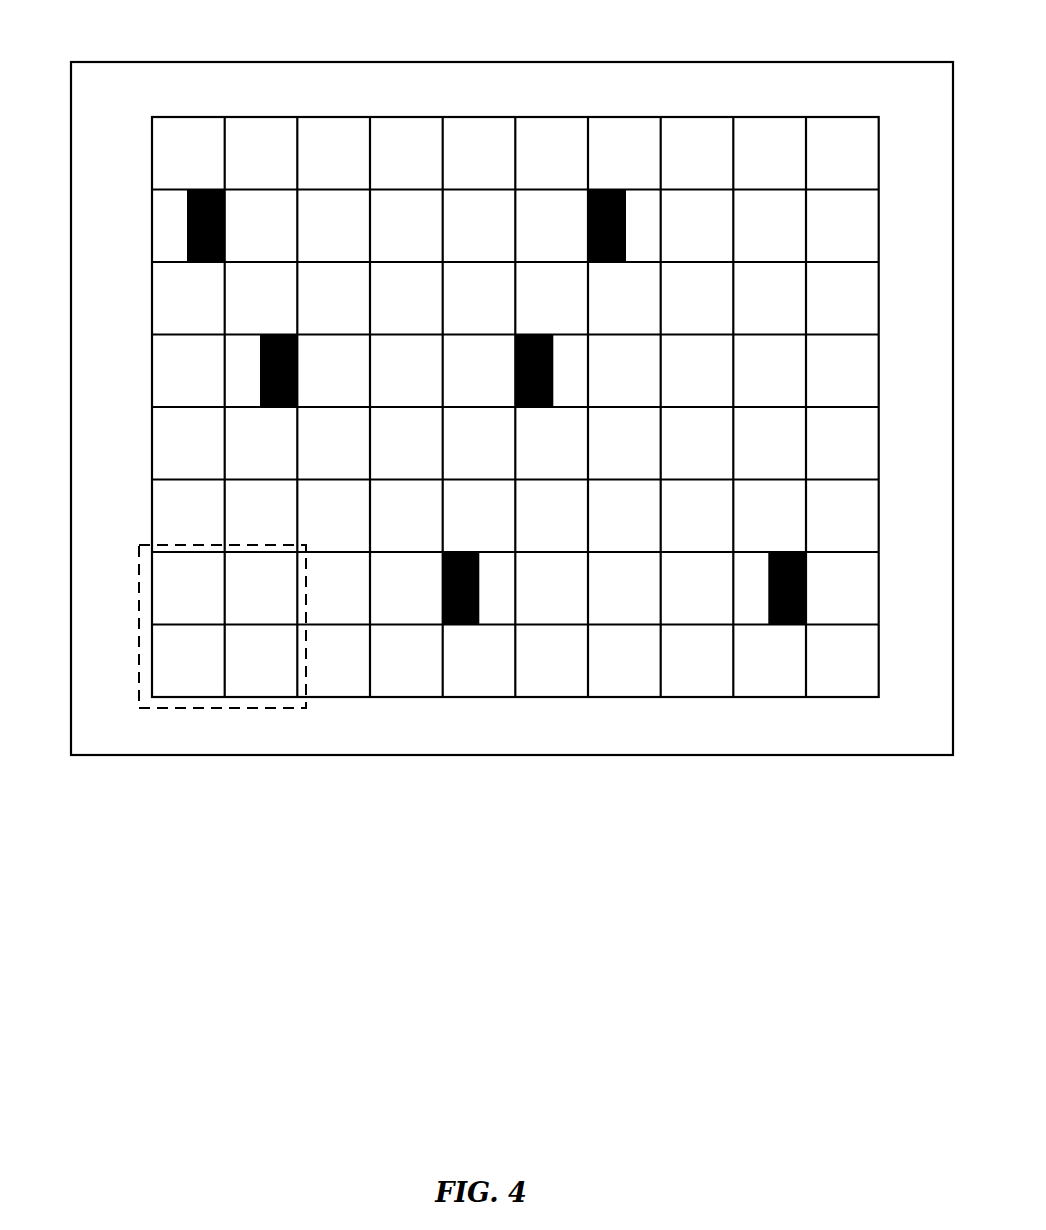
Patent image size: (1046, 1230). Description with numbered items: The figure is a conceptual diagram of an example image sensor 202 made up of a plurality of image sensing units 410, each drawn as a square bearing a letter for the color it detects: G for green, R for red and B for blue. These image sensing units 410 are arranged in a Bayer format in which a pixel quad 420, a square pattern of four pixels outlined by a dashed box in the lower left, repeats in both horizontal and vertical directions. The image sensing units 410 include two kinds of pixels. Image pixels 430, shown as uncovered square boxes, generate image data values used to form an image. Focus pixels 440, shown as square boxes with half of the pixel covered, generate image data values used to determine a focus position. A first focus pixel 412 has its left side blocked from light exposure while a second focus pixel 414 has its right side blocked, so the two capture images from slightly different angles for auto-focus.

The image sensor 202 is at (104, 871).
The image sensing unit 410 is at (480, 379).
The first focus pixel 412 is at (497, 610).
The second focus pixel 414 is at (755, 602).
The pixel quad 420 is at (224, 710).
The image pixel 430 is at (170, 146).
The focus pixel 440 is at (170, 219).